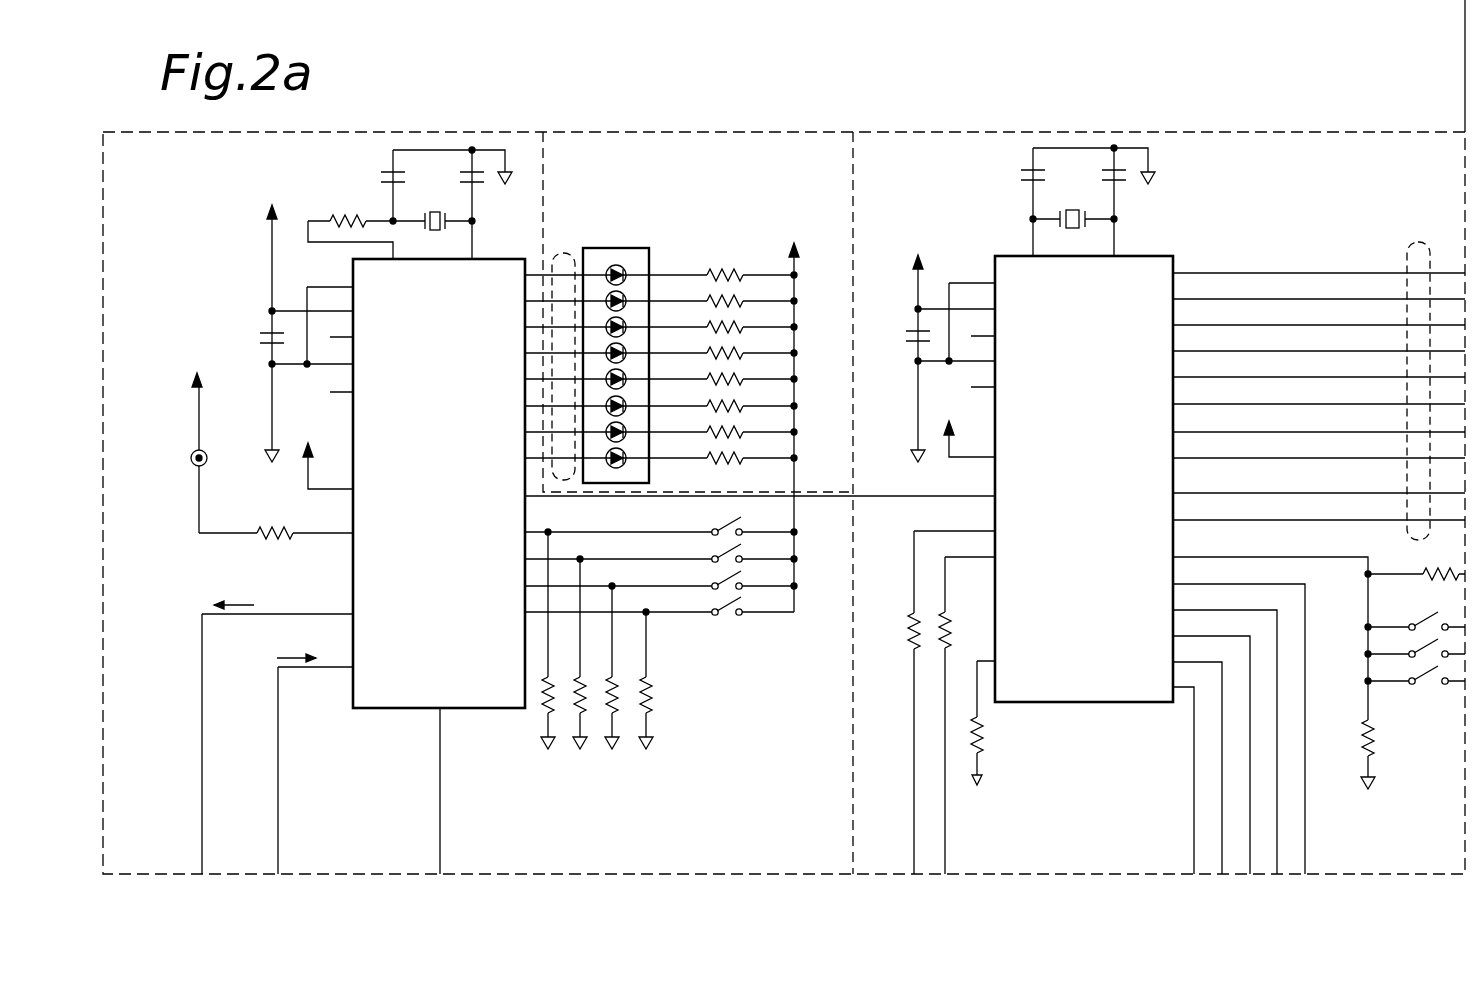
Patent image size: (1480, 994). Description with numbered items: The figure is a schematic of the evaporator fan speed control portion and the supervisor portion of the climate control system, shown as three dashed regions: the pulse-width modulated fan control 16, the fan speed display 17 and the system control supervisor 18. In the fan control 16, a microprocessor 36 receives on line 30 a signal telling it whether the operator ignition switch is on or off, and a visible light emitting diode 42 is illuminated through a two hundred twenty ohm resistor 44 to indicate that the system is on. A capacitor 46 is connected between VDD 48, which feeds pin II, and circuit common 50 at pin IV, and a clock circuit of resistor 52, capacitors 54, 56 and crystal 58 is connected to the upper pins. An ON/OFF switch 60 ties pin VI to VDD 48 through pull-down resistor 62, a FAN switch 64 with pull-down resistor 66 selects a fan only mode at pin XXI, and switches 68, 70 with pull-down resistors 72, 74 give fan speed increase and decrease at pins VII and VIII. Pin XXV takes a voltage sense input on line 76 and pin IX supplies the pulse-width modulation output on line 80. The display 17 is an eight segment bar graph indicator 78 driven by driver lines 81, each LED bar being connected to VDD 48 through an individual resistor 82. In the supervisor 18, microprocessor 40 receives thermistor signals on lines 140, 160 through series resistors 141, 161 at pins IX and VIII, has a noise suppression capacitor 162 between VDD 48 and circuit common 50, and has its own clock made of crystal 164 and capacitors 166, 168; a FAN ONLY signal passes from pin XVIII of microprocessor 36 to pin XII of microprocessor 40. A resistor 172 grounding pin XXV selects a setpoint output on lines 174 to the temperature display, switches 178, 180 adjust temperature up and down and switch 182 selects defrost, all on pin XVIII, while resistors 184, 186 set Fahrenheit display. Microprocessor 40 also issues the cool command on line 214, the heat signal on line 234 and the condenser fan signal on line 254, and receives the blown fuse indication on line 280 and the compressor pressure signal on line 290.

The pulse-width modulated fan control circuit 16 is at (672, 852).
The fan speed display circuit 17 is at (727, 180).
The system control supervisor 18 is at (911, 205).
The line 30 is at (278, 697).
The microprocessor 36 is at (353, 708).
The integrated circuit microprocessor 40 is at (1173, 256).
The visible light emitting diode 42 is at (193, 452).
The resistor 44 is at (265, 534).
The capacitor 46 is at (262, 338).
The VDD supply 48 is at (268, 210).
The circuit common 50 is at (270, 450).
The resistor 52 is at (343, 214).
The capacitor 54 is at (398, 180).
The capacitor 56 is at (470, 180).
The crystal 58 is at (446, 221).
The ON/OFF switch 60 is at (718, 525).
The pull-down resistor 62 is at (546, 702).
The FAN switch 64 is at (737, 612).
The pull-down resistor 66 is at (615, 695).
The switch 68 is at (718, 553).
The switch 70 is at (718, 580).
The pull-down resistor 72 is at (648, 682).
The pull-down resistor 74 is at (583, 705).
The line 76 is at (440, 802).
The eight segment bar graph indicator 78 is at (614, 248).
The line 80 is at (202, 697).
The driver lines 81 is at (563, 252).
The resistors 82 is at (720, 246).
The line 140 is at (945, 852).
The resistor 141 is at (945, 650).
The line 160 is at (914, 832).
The resistor 161 is at (914, 613).
The capacitor 162 is at (918, 338).
The crystal 164 is at (1060, 219).
The capacitor 166 is at (1030, 178).
The capacitor 168 is at (1117, 181).
The resistor 172 is at (980, 742).
The lines 174 is at (1407, 250).
The switch 178 is at (1425, 612).
The switch 180 is at (1425, 641).
The switch 182 is at (1434, 672).
The resistor 184 is at (1432, 573).
The resistor 186 is at (1372, 738).
The line 214 is at (1305, 842).
The line 234 is at (1277, 812).
The condenser fan line 254 is at (1250, 782).
The line 280 is at (1222, 812).
The line 290 is at (1194, 735).